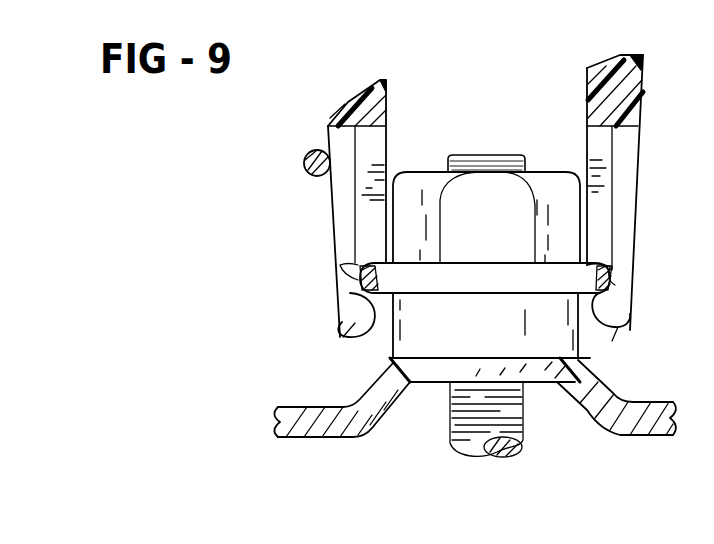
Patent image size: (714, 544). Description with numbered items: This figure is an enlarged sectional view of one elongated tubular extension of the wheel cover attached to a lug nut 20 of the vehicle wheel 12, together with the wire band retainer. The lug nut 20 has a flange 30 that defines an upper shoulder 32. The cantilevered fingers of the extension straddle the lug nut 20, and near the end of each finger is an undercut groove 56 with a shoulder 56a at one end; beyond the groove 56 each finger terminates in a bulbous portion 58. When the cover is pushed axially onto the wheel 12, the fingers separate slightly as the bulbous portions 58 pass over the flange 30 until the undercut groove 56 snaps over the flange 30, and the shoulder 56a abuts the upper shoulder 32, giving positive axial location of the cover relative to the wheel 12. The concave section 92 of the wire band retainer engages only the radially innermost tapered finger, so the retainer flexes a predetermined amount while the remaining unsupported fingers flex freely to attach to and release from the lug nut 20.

The vehicle wheel 12 is at (300, 407).
The lug nut 20 is at (560, 197).
The flange 30 is at (410, 272).
The upper shoulder 32 is at (488, 263).
The undercut groove 56 is at (360, 281).
The shoulder 56a is at (360, 268).
The bulbous portion 58 is at (343, 340).
The concave section 92 is at (305, 152).